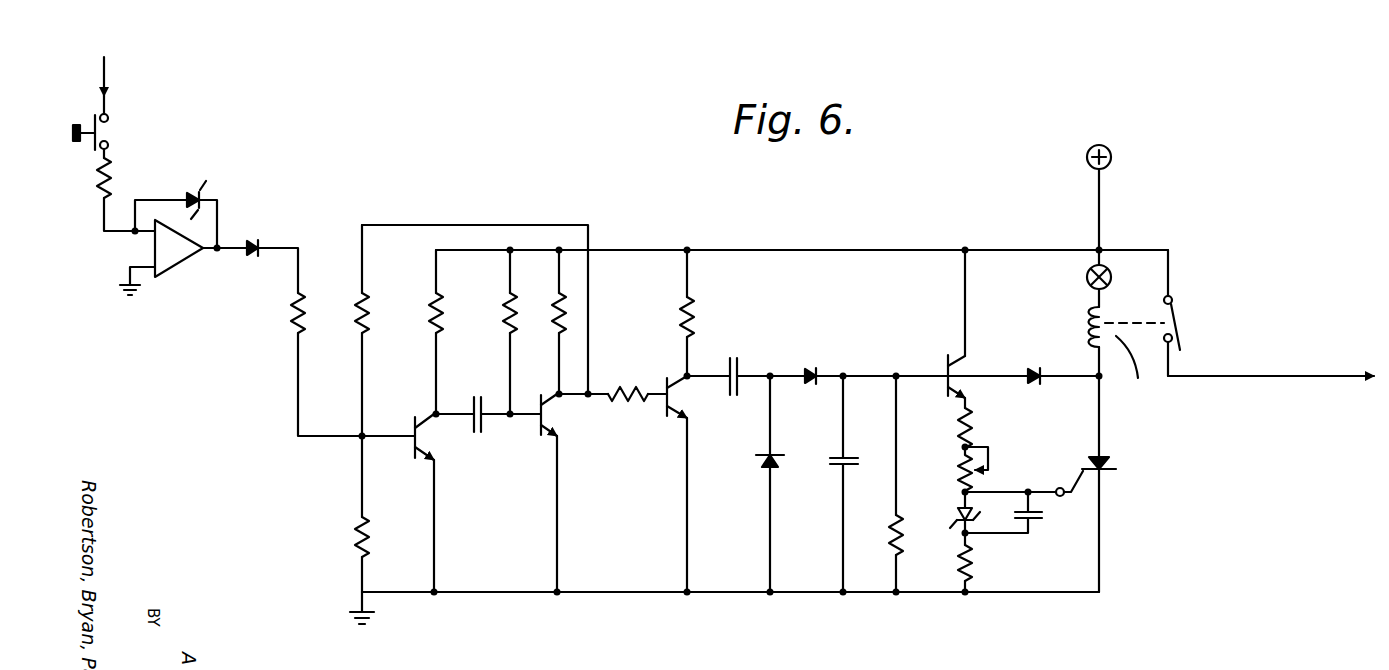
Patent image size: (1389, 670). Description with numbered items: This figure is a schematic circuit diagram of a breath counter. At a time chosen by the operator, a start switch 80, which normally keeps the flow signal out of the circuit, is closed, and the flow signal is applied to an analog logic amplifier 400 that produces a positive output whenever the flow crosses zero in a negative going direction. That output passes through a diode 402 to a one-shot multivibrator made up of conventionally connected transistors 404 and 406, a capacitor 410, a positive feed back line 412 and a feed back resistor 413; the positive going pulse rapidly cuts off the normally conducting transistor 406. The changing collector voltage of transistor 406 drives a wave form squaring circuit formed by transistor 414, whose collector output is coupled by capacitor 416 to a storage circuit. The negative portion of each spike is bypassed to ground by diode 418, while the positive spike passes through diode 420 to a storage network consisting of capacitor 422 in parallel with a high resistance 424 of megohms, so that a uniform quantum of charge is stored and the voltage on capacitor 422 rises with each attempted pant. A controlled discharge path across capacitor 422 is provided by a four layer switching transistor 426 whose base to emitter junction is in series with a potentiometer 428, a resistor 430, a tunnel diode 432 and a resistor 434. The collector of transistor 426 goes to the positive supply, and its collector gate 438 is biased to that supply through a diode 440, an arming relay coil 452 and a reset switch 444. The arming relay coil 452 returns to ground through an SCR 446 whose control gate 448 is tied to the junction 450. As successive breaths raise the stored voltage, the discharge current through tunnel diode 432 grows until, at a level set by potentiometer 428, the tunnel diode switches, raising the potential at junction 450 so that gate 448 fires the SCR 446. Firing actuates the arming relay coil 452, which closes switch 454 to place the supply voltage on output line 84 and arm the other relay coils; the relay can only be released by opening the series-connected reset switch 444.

The start switch 80 is at (78, 120).
The analog logic amplifier 400 is at (177, 263).
The diode 402 is at (253, 240).
The transistor 404 is at (415, 447).
The transistor 406 is at (552, 418).
The capacitor 410 is at (481, 430).
The positive feed back line 412 is at (490, 222).
The feed back resistor 413 is at (370, 321).
The transistor 414 is at (680, 400).
The capacitor 416 is at (735, 366).
The diode 418 is at (765, 459).
The diode 420 is at (818, 366).
The capacitor 422 is at (836, 464).
The high resistance 424 is at (890, 525).
The four layer switching transistor 426 is at (948, 358).
The potentiometer 428 is at (958, 471).
The resistor 430 is at (975, 429).
The tunnel diode 432 is at (955, 516).
The resistor 434 is at (970, 571).
The collector gate 438 is at (970, 377).
The diode 440 is at (1035, 374).
The reset switch 444 is at (1117, 268).
The SCR 446 is at (1110, 474).
The control gate 448 is at (1088, 479).
The junction 450 is at (968, 491).
The arming relay coil 452 is at (1105, 306).
The switch 454 is at (1185, 342).
The output line 84 is at (1318, 380).